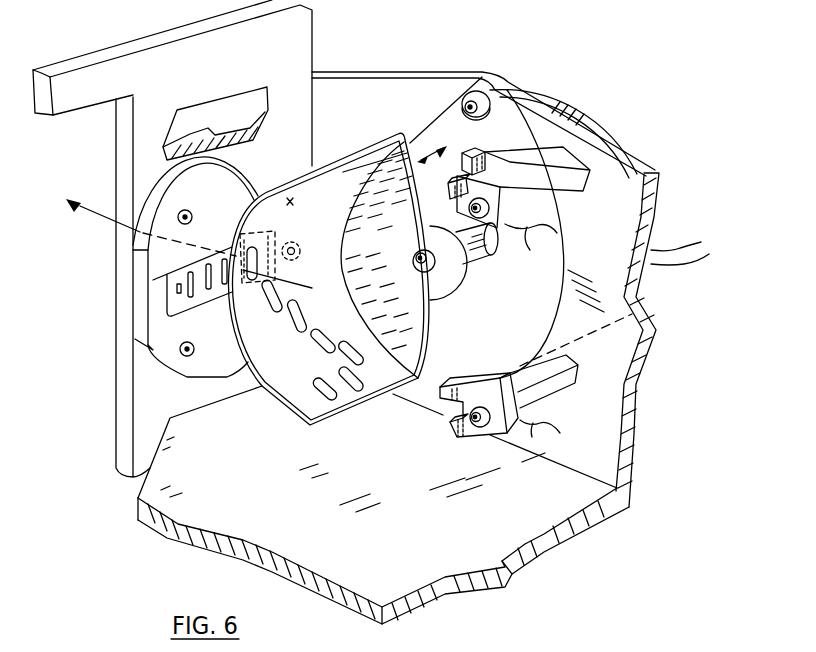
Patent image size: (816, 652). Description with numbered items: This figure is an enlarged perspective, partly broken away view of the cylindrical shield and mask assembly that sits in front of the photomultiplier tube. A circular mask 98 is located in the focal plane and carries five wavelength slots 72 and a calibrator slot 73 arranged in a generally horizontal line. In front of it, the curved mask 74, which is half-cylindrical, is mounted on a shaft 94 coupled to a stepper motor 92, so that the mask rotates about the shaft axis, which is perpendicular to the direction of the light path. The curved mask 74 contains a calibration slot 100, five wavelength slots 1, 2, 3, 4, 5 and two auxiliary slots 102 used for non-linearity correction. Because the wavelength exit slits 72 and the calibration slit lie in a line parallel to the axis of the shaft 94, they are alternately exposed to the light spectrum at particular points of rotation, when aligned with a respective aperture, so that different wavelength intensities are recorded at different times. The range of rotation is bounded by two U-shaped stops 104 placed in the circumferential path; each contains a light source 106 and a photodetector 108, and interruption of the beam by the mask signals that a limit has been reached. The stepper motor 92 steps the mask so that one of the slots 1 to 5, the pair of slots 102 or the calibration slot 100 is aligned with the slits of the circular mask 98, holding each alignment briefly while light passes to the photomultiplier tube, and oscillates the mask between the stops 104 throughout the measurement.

The wavelength slots 72 is at (167, 274).
The calibrator slot 73 is at (177, 289).
The curved mask 74 is at (343, 172).
The stepper motor 92 is at (591, 115).
The shaft 94 is at (473, 258).
The circular mask 98 is at (257, 170).
The calibration slot 100 is at (268, 201).
The auxiliary slots 102 is at (335, 398).
The stops 104 is at (505, 165).
The light source 106 is at (450, 192).
The photodetector 108 is at (470, 155).
The wavelength slot 1 is at (252, 281).
The wavelength slot 2 is at (272, 314).
The wavelength slot 3 is at (303, 315).
The wavelength slot 4 is at (334, 338).
The wavelength slot 5 is at (364, 363).